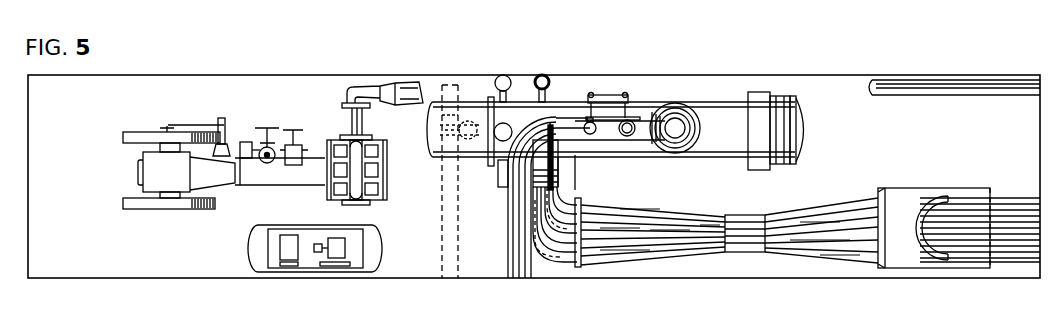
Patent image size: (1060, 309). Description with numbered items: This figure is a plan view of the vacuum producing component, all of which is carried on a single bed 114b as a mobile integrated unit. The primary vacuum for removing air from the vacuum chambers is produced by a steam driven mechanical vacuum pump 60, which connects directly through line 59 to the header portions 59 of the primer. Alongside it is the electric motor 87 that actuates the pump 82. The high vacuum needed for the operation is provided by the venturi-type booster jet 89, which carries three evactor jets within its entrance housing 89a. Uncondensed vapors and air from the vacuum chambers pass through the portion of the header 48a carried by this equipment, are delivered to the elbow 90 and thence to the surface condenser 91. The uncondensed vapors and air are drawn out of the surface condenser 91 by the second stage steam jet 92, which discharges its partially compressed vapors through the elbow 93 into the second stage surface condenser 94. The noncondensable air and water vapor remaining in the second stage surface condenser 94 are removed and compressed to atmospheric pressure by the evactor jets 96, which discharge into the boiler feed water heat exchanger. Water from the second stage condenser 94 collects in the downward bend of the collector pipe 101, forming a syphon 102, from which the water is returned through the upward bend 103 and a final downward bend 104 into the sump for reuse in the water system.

The portion of the header 48a is at (1017, 246).
The line 59 is at (396, 85).
The vacuum pump 60 is at (333, 140).
The pump 82 is at (436, 135).
The motor 87 is at (441, 86).
The booster jet 89 is at (808, 245).
The entrance housing 89a is at (975, 192).
The elbow 90 is at (553, 247).
The surface condenser 91 is at (660, 157).
The second stage steam jet 92 is at (556, 118).
The elbow 93 is at (542, 75).
The second stage surface condenser 94 is at (605, 133).
The evactor jets 96 is at (503, 75).
The collector pipe 101 is at (587, 108).
The syphon 102 is at (598, 92).
The upward bend 103 is at (618, 95).
The final downward bend 104 is at (632, 122).
The bed 114b is at (220, 268).